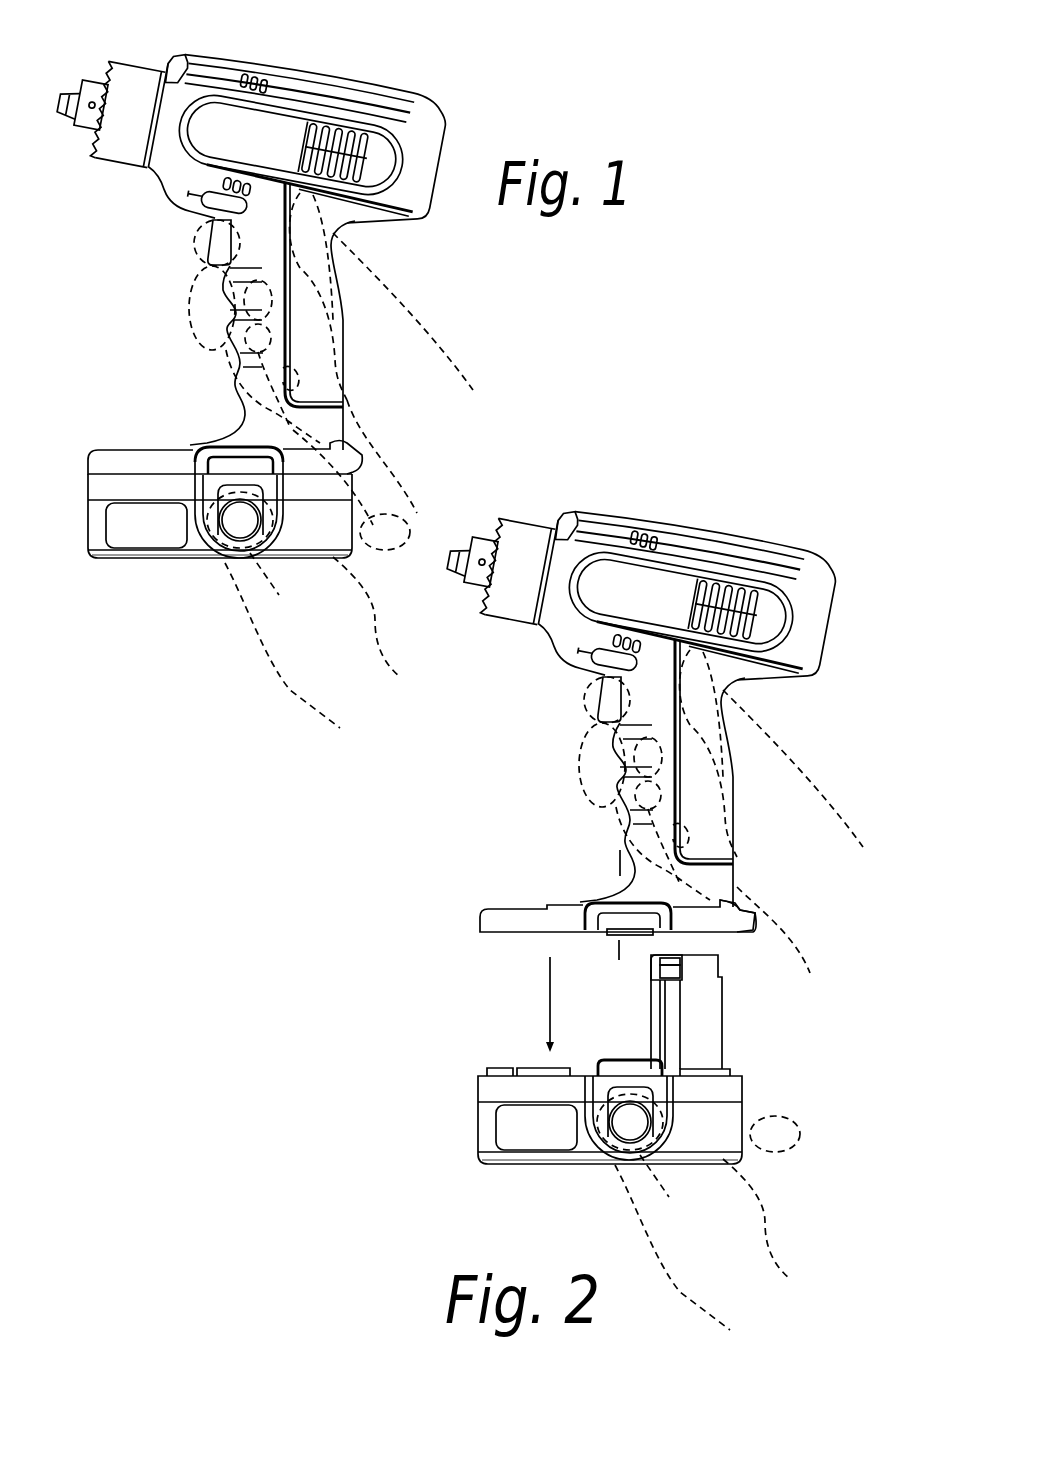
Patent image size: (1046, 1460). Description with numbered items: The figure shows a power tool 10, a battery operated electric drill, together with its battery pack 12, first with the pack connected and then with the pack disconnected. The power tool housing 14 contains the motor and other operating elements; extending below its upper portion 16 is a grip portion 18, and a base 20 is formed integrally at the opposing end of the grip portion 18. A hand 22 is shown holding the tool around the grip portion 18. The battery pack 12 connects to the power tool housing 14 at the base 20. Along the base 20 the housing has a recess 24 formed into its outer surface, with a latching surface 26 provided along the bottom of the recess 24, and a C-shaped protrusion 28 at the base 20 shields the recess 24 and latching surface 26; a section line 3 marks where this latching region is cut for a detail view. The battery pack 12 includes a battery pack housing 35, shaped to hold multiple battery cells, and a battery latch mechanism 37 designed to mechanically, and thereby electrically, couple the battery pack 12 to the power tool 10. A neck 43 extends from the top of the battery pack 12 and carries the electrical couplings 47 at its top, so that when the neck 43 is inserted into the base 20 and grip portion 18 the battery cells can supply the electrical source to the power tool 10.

In FIG. 1, the power tool 10 is at (400, 77).
In FIG. 2, the power tool 10 is at (659, 758).
In FIG. 1, the battery pack 12 is at (231, 512).
In FIG. 2, the battery pack 12 is at (614, 1091).
In FIG. 1, the power tool housing 14 is at (152, 182).
In FIG. 2, the power tool housing 14 is at (497, 615).
In FIG. 1, the upper portion 16 is at (444, 152).
In FIG. 2, the upper portion 16 is at (705, 608).
In FIG. 1, the grip portion 18 is at (233, 420).
In FIG. 2, the grip portion 18 is at (662, 773).
In FIG. 1, the base 20 is at (97, 450).
In FIG. 2, the base 20 is at (607, 916).
In FIG. 1, the hand 22 is at (417, 313).
In FIG. 2, the hand 22 is at (803, 768).
In FIG. 2, the recess 24 is at (657, 934).
In FIG. 2, the latching surface 26 is at (632, 922).
In FIG. 2, the C-shaped protrusion 28 is at (597, 907).
In FIG. 2, the section line 3- 3 is at (612, 862).
In FIG. 1, the battery pack housing 35 is at (113, 560).
In FIG. 2, the battery pack housing 35 is at (505, 1165).
In FIG. 1, the battery latch mechanism 37 is at (247, 502).
In FIG. 2, the battery latch mechanism 37 is at (630, 1107).
In FIG. 2, the neck 43 is at (723, 1018).
In FIG. 2, the electrical couplings 47 is at (655, 950).